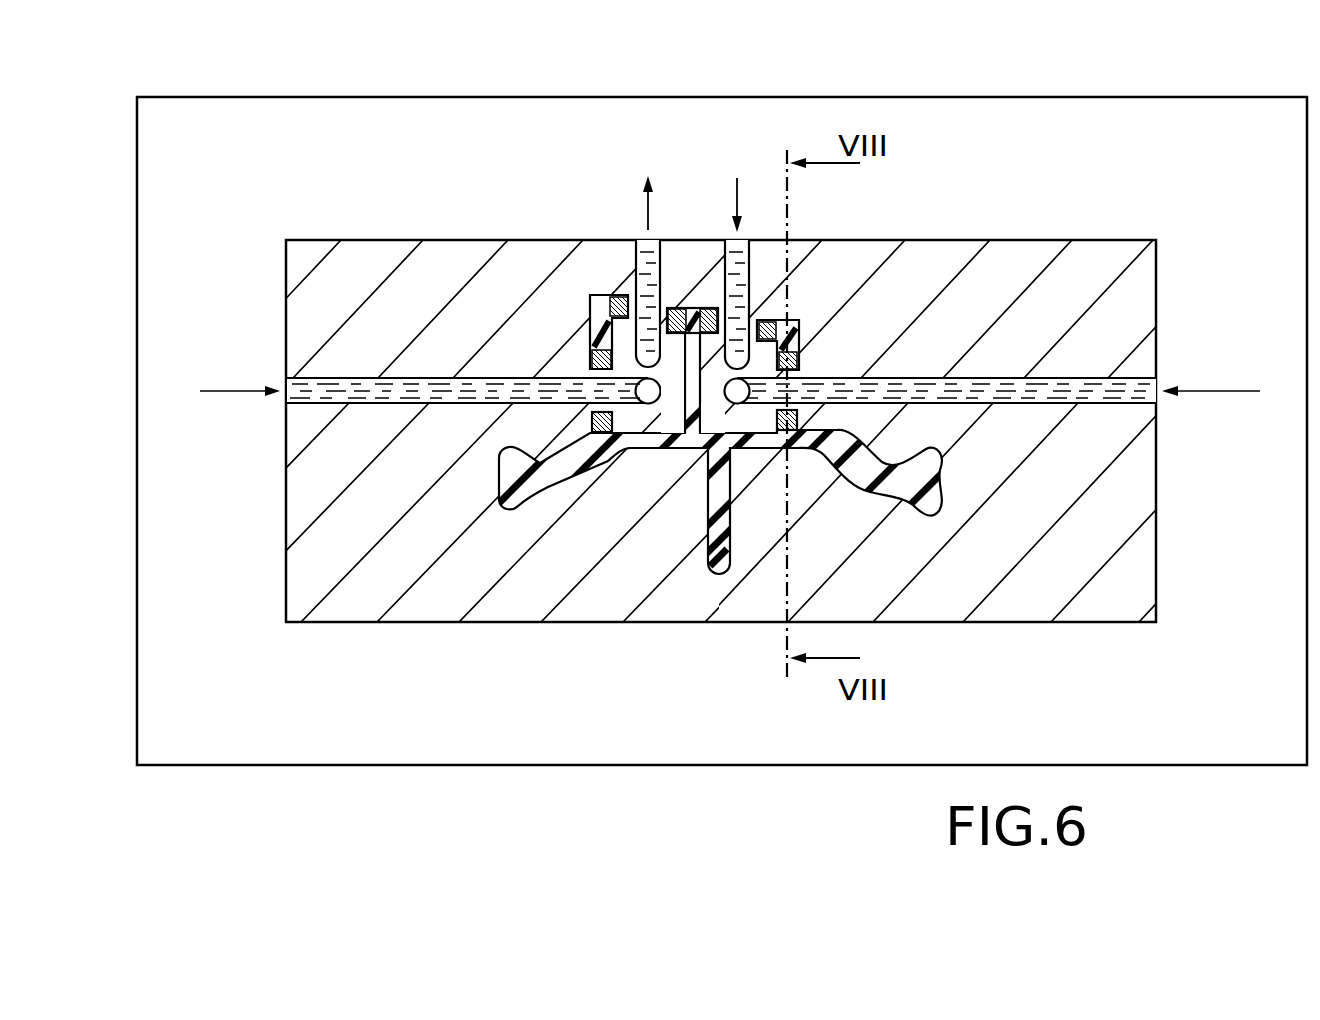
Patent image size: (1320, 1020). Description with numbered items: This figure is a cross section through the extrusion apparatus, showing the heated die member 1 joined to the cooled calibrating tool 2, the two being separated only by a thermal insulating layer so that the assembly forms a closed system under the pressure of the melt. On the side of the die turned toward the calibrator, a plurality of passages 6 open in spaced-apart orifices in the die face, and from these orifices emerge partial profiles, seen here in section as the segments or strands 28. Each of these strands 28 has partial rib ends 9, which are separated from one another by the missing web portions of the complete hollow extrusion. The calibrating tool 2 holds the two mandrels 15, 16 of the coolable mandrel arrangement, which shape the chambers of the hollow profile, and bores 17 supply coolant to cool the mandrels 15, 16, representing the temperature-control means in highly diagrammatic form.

The heated die member 1 is at (230, 788).
The calibrating tool 2 is at (352, 600).
The passages 6 is at (590, 300).
The partial rib ends 9 is at (592, 355).
The mandrel 15 is at (662, 420).
The mandrel 16 is at (760, 420).
The bores 17 is at (320, 388).
The segments or strands 28 is at (803, 350).